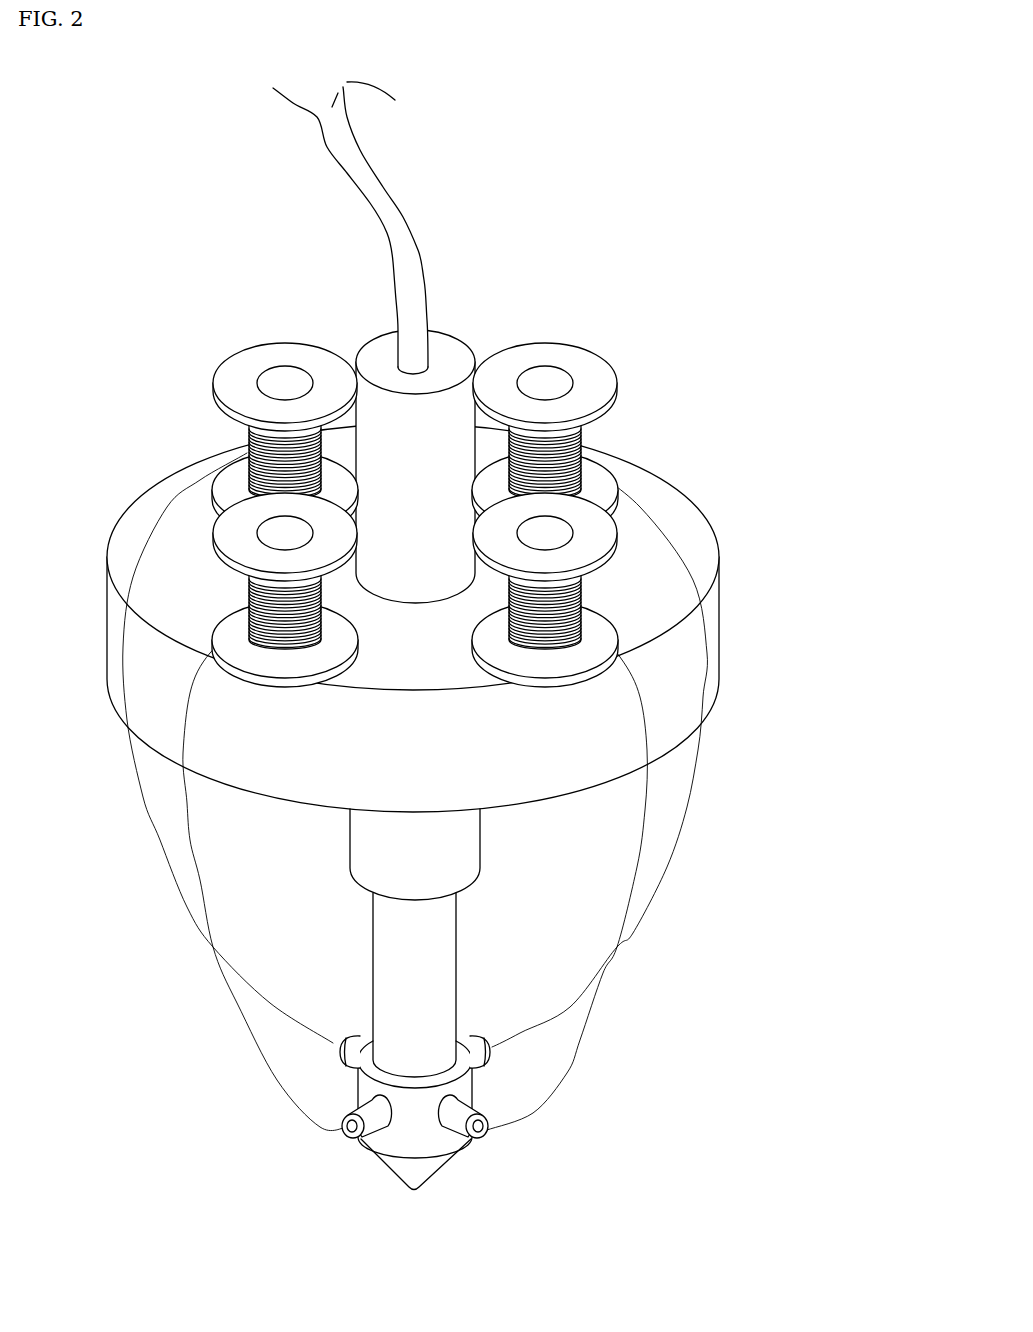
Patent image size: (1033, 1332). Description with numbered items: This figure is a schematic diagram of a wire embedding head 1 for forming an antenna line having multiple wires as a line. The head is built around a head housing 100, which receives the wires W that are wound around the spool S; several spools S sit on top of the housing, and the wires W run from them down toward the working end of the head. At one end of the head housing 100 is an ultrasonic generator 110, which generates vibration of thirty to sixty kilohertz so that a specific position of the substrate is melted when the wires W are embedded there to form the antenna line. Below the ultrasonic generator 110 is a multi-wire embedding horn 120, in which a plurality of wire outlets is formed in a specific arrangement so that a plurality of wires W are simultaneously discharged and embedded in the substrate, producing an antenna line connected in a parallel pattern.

The wire embedding head 1 is at (122, 86).
The head housing 100 is at (447, 352).
The ultrasonic generator 110 is at (435, 962).
The multi-wire embedding horn 120 is at (446, 1160).
The spool S is at (238, 363).
The wire W is at (687, 807).